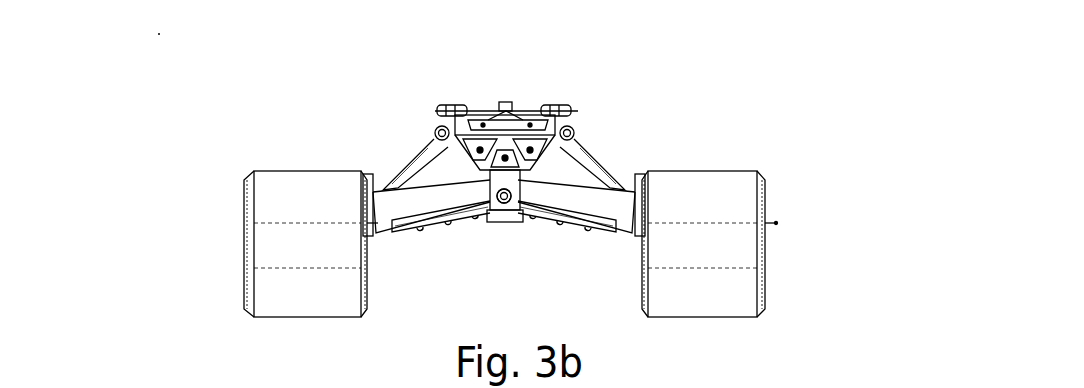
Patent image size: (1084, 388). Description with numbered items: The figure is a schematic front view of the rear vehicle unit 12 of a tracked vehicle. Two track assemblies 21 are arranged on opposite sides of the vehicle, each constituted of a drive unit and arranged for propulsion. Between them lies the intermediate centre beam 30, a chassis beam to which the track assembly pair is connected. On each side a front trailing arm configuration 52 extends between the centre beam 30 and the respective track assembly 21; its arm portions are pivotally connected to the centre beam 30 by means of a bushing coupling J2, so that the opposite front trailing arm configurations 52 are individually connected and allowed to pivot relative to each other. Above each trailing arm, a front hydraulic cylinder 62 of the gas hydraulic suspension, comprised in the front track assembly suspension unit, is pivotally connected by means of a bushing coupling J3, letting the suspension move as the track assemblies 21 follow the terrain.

The vehicle chassis assembly 12 is at (625, 78).
The track assembly 21 is at (307, 170).
The centre beam 30 is at (485, 110).
The bushing coupling J3 is at (435, 133).
The bushing coupling J2 is at (505, 200).
The front hydraulic cylinder 62 is at (405, 157).
The front trailing arm configuration 52 is at (433, 223).